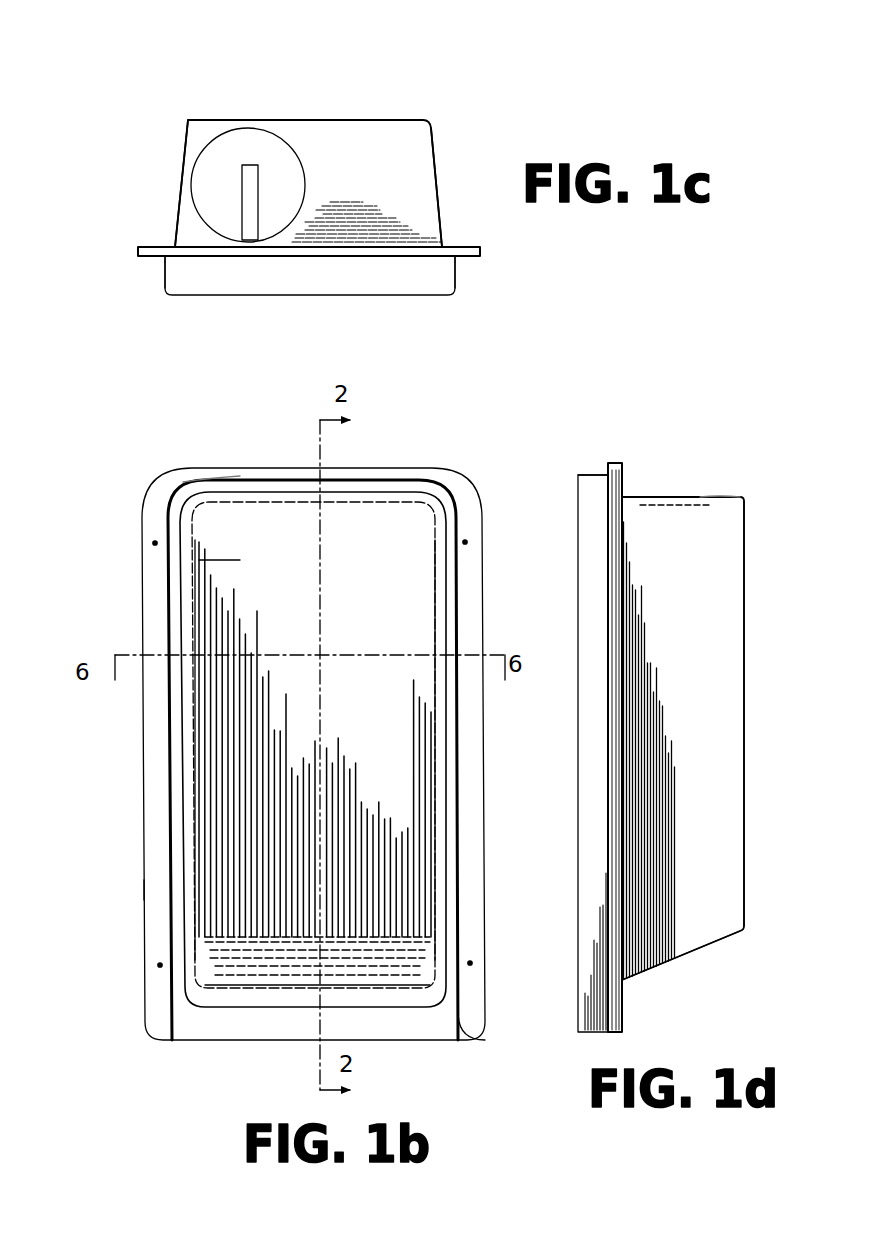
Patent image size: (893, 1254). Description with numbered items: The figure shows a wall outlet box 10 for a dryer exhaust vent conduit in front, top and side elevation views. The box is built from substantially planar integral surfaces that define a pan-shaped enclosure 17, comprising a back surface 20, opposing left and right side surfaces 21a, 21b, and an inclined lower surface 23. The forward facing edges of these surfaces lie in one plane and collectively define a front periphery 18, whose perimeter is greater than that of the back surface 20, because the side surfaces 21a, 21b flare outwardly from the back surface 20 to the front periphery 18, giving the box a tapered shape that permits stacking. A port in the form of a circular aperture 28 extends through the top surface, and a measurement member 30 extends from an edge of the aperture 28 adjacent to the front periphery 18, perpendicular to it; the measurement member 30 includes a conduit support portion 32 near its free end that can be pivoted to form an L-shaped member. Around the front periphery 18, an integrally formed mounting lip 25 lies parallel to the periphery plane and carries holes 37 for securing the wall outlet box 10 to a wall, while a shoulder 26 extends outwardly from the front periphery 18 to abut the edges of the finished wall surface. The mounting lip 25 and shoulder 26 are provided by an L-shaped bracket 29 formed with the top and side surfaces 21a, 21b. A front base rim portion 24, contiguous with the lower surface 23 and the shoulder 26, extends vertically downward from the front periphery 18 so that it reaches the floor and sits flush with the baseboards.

In FIG. 1c, the wall outlet box 10 is at (118, 213).
In FIG. 1b, the wall outlet box 10 is at (120, 945).
In FIG. 1d, the wall outlet box 10 is at (680, 470).
In FIG. 1b, the enclosure 17 is at (240, 570).
In FIG. 1c, the front periphery 18 is at (403, 296).
In FIG. 1b, the front periphery 18 is at (268, 495).
In FIG. 1d, the front periphery 18 is at (578, 522).
In FIG. 1c, the back surface 20 is at (372, 120).
In FIG. 1b, the back surface 20 is at (240, 845).
In FIG. 1d, the back surface 20 is at (746, 722).
In FIG. 1c, the side surface 21a is at (183, 158).
In FIG. 1b, the side surface 21a is at (192, 750).
In FIG. 1c, the side surface 21b is at (437, 152).
In FIG. 1b, the side surface 21b is at (445, 795).
In FIG. 1d, the side surface 21b is at (718, 595).
In FIG. 1b, the inclined lower surface 23 is at (240, 985).
In FIG. 1d, the inclined lower surface 23 is at (690, 955).
In FIG. 1b, the front base rim portion 24 is at (432, 1025).
In FIG. 1c, the mounting lip 25 is at (140, 253).
In FIG. 1b, the mounting lip 25 is at (160, 710).
In FIG. 1d, the mounting lip 25 is at (626, 1003).
In FIG. 1c, the shoulder 26 is at (162, 288).
In FIG. 1b, the shoulder 26 is at (395, 488).
In FIG. 1d, the shoulder 26 is at (592, 475).
In FIG. 1c, the aperture 28 is at (250, 165).
In FIG. 1c, the L-shaped bracket 29 is at (148, 282).
In FIG. 1b, the L-shaped bracket 29 is at (152, 893).
In FIG. 1c, the measurement member 30 is at (233, 187).
In FIG. 1b, the measurement member 30 is at (255, 490).
In FIG. 1d, the measurement member 30 is at (700, 497).
In FIG. 1b, the conduit support portion 32 is at (152, 542).
In FIG. 1b, the holes 37 is at (160, 1020).